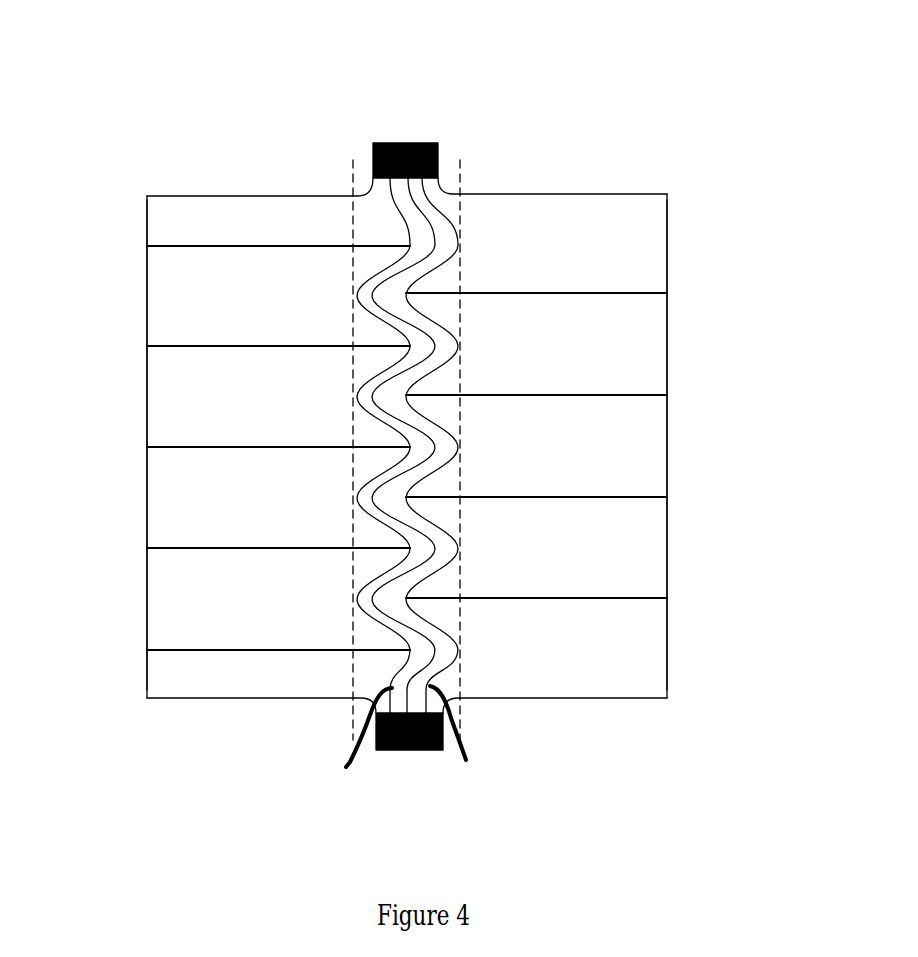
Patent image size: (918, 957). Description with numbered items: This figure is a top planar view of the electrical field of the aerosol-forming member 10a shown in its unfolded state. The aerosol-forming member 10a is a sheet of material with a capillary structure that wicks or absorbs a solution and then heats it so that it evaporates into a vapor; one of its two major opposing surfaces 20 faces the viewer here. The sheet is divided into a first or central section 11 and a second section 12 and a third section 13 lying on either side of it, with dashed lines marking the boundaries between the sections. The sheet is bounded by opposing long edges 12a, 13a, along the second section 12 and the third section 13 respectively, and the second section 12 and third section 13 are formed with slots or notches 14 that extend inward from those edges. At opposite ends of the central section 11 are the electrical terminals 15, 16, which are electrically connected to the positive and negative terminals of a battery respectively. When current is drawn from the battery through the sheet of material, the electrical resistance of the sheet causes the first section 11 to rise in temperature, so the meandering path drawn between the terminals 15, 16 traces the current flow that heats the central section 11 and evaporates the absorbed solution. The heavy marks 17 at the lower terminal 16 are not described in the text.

The aerosol-forming member 10a is at (514, 94).
The first or central section 11 is at (405, 520).
The second section 12 is at (238, 390).
The long edge 12a is at (147, 300).
The third section 13 is at (553, 445).
The long edge 13a is at (667, 340).
The slots or notches 14 is at (535, 292).
The electrical terminal 15 is at (401, 143).
The electrical terminal 16 is at (397, 750).
The attachment flanges 17 is at (404, 740).
The major opposing surface 20 is at (655, 462).